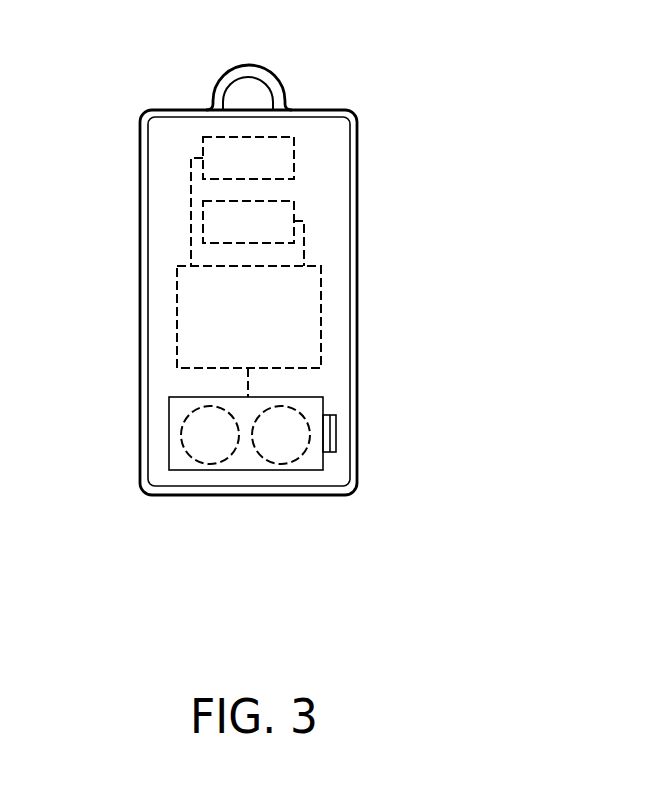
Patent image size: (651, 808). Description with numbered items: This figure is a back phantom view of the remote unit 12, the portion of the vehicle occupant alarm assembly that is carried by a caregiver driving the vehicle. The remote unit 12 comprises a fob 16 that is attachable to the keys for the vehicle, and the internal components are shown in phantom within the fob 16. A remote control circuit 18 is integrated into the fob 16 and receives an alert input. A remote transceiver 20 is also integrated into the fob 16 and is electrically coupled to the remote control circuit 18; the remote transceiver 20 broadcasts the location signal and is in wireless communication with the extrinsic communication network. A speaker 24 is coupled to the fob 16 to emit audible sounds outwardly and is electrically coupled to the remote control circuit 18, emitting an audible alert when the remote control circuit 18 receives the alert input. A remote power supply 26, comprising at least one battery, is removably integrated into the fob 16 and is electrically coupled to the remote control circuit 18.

The remote unit 12 is at (388, 115).
The fob 16 is at (357, 268).
The remote control circuit 18 is at (321, 323).
The remote transceiver 20 is at (203, 135).
The speaker 24 is at (203, 222).
The remote power supply 26 is at (297, 458).